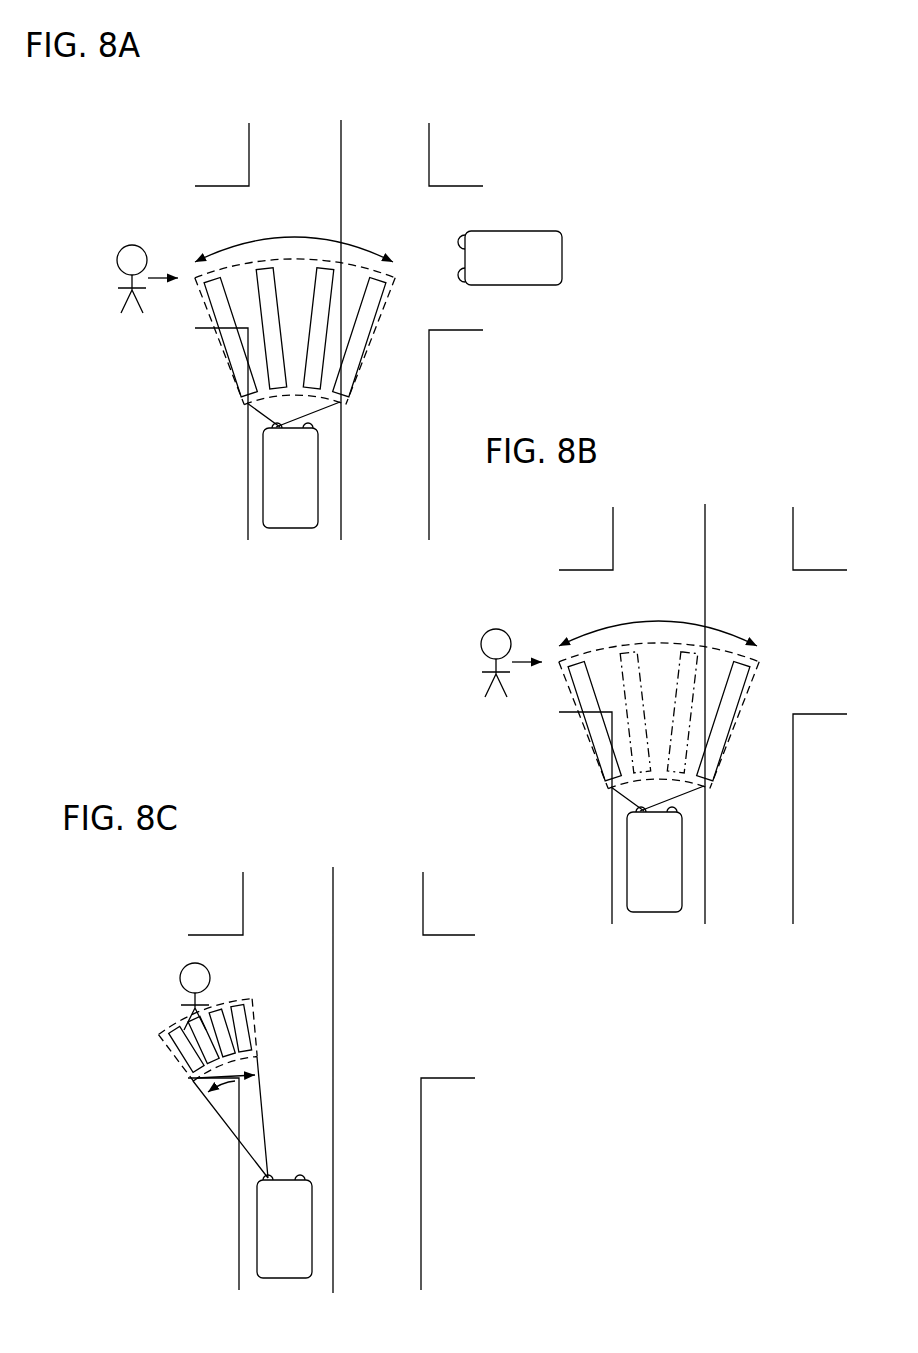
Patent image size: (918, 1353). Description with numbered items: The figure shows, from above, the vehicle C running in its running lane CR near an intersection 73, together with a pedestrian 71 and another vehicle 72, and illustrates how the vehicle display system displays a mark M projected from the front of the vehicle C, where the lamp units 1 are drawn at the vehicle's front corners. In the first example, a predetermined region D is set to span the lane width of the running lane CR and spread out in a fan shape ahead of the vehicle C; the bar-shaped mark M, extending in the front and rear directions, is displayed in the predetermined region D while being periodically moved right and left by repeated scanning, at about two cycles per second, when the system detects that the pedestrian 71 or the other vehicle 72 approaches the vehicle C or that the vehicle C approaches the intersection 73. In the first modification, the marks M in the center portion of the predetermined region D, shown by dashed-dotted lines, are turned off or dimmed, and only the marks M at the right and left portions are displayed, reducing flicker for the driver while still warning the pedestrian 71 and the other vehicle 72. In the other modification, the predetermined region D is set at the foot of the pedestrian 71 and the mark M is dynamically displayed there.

In FIG. 8A, the object detection sensor (radar) 1 is at (277, 426).
In FIG. 8B, the object detection sensor (radar) 1 is at (658, 809).
In FIG. 8C, the object detection sensor (radar) 1 is at (268, 1178).
In FIG. 8A, the pedestrian 71 is at (112, 283).
In FIG. 8B, the pedestrian 71 is at (477, 663).
In FIG. 8C, the pedestrian 71 is at (170, 972).
In FIG. 8A, the other vehicle 72 is at (562, 247).
In FIG. 8A, the intersection 73 is at (375, 228).
In FIG. 8B, the intersection 73 is at (715, 583).
In FIG. 8C, the intersection 73 is at (226, 1083).
In FIG. 8A, the vehicle C is at (298, 528).
In FIG. 8B, the vehicle C is at (654, 891).
In FIG. 8C, the vehicle C is at (290, 1272).
In FIG. 8A, the running lane CR is at (291, 140).
In FIG. 8B, the running lane CR is at (703, 694).
In FIG. 8C, the running lane CR is at (283, 888).
In FIG. 8A, the mark M is at (235, 352).
In FIG. 8B, the mark M is at (648, 716).
In FIG. 8C, the mark M is at (178, 1050).
In FIG. 8A, the predetermined region D is at (362, 352).
In FIG. 8B, the predetermined region D is at (667, 716).
In FIG. 8C, the predetermined region D is at (253, 1028).